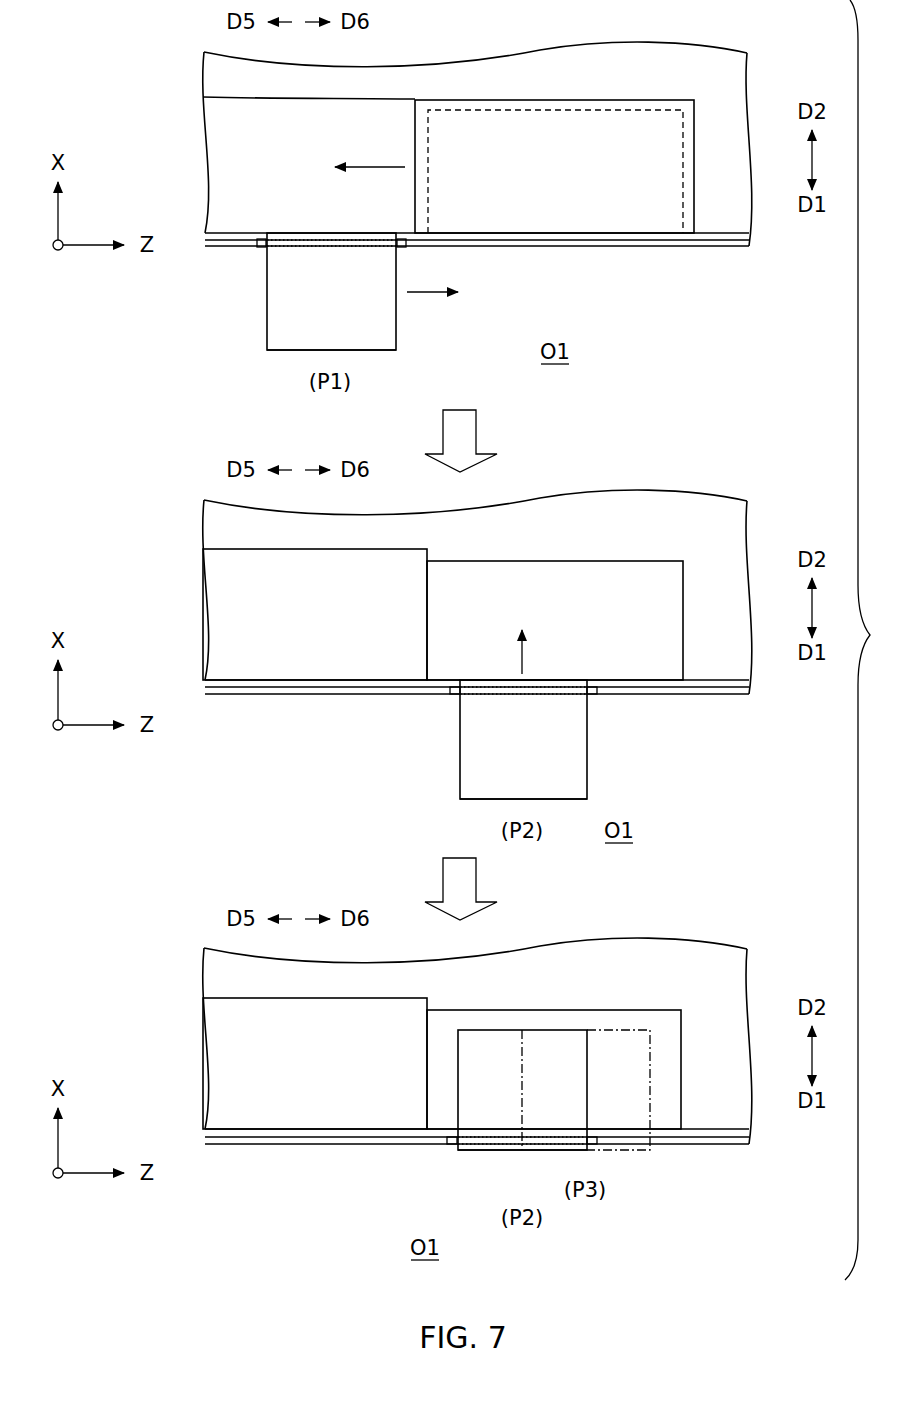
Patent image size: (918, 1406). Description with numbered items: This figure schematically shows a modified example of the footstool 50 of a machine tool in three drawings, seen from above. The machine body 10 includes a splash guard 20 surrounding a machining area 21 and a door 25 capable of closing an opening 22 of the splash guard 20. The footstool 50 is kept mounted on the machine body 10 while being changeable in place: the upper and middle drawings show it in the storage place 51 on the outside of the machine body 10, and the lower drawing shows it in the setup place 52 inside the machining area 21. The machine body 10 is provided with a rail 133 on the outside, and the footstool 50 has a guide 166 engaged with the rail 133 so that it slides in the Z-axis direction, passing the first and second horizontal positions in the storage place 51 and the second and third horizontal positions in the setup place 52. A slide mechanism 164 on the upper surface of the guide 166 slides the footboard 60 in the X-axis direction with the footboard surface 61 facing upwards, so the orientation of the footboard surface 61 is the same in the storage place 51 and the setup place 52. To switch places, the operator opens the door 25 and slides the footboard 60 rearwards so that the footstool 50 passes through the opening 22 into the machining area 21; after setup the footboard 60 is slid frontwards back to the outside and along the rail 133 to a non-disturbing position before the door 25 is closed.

The machine body 10 is at (190, 78).
The splash guard 20 is at (222, 198).
The machining area 21 is at (637, 188).
The opening 22 is at (576, 680).
The door 25 is at (203, 97).
The footstool 50 is at (364, 814).
The storage place 51 is at (266, 352).
The setup place 52 is at (541, 1153).
The footboard 60 is at (396, 691).
The footboard surface 61 is at (312, 305).
The rail 133 is at (722, 247).
The slide mechanism 164 is at (307, 258).
The guide 166 is at (262, 248).